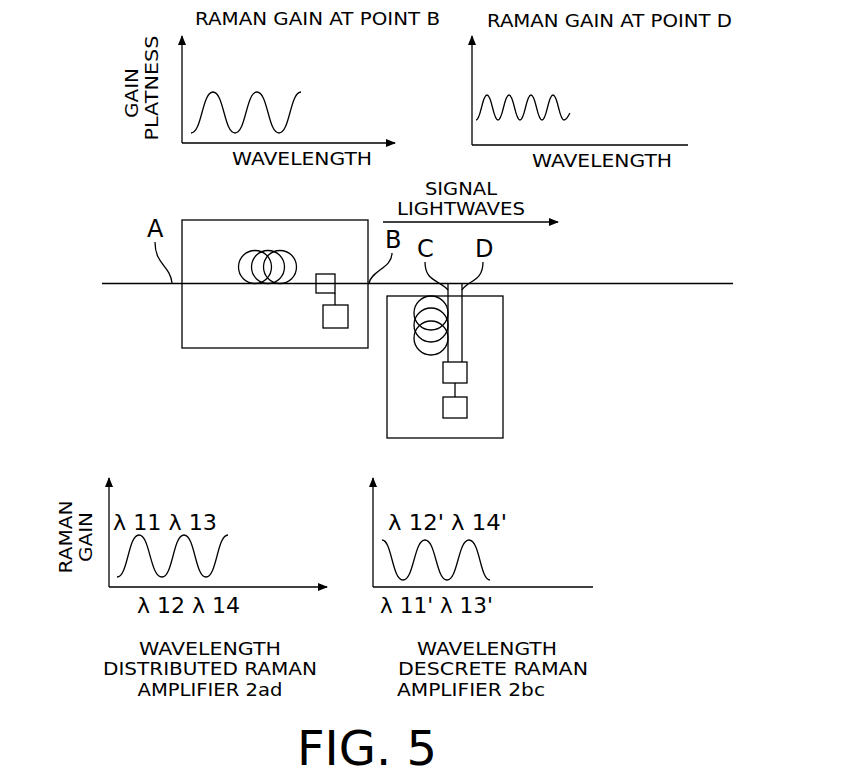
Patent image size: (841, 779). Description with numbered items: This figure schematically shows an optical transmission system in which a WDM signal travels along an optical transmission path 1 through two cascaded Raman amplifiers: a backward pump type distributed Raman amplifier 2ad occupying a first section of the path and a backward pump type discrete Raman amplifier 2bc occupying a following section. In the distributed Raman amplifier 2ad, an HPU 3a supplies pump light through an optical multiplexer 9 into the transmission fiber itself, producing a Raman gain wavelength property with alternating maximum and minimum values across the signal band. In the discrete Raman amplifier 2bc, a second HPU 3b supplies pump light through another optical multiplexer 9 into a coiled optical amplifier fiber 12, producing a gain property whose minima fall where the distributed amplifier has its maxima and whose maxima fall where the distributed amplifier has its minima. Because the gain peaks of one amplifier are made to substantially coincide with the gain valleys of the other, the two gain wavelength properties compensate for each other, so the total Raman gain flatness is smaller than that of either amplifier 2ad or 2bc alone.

The optical transmission path 1 is at (243, 253).
The backward pump type distributed Raman amplifier 2ad is at (190, 322).
The backward pump type discrete Raman amplifier 2bc is at (492, 334).
The HPU 3a is at (323, 317).
The HPU 3b is at (467, 408).
The optical multiplexer 9 is at (325, 274).
The optical amplifier fiber 12 is at (421, 355).